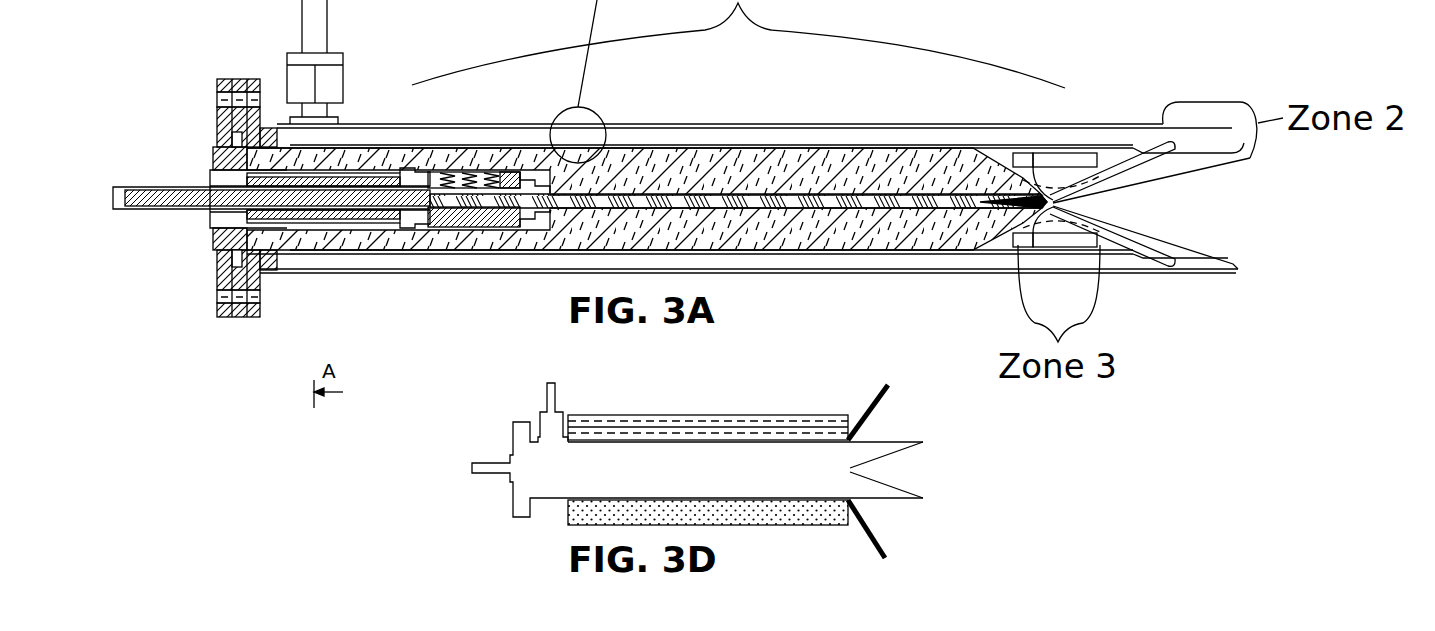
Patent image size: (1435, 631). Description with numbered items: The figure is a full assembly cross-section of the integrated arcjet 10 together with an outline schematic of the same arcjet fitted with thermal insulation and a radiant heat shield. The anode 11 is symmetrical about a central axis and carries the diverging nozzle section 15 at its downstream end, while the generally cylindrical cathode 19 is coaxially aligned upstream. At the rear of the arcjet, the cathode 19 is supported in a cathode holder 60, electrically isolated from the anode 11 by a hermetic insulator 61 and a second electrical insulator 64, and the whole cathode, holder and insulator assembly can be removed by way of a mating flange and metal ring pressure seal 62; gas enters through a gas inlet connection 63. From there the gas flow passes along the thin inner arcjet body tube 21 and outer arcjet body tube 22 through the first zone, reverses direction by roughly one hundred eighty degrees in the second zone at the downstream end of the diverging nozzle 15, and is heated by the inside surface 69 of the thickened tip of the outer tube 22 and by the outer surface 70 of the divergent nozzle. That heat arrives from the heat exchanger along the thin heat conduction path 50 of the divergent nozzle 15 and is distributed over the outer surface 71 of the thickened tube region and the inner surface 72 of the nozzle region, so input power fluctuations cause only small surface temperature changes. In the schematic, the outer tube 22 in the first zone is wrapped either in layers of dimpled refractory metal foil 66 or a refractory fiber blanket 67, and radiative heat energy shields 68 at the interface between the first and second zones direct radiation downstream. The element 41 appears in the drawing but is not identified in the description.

In FIG. 3A, the integrated arcjet 10 is at (505, 125).
In FIG. 3A, the anode 11 is at (1187, 250).
In FIG. 3A, the diverging nozzle section 15 is at (1147, 163).
In FIG. 3A, the cathode 19 is at (1040, 202).
In FIG. 3A, the inner arcjet body tube 21 is at (780, 147).
In FIG. 3A, the outer arcjet body tube 22 is at (640, 134).
In FIG. 3A, the central tube tip 41 is at (1030, 217).
In FIG. 3A, the heat conduction path 50 is at (1123, 183).
In FIG. 3A, the cathode holder 60 is at (477, 227).
In FIG. 3A, the hermetic electrical isolation insulator 61 is at (372, 225).
In FIG. 3A, the mating flange and metal ring pressure seal 62 is at (237, 317).
In FIG. 3A, the gas inlet connection 63 is at (317, 32).
In FIG. 3A, the electrical insulator 64 is at (778, 227).
In FIG. 3D, the refractory metal foil 66 is at (712, 422).
In FIG. 3D, the refractory fiber blanket 67 is at (770, 517).
In FIG. 3D, the radiative heat energy shield 68 is at (883, 400).
In FIG. 3A, the inside surface of thickened tip 69 is at (1153, 130).
In FIG. 3A, the outer surface of divergent nozzle section 70 is at (1177, 150).
In FIG. 3A, the outer surface of thickened region 71 is at (1200, 128).
In FIG. 3A, the inner surface of divergent nozzle region 72 is at (1218, 152).